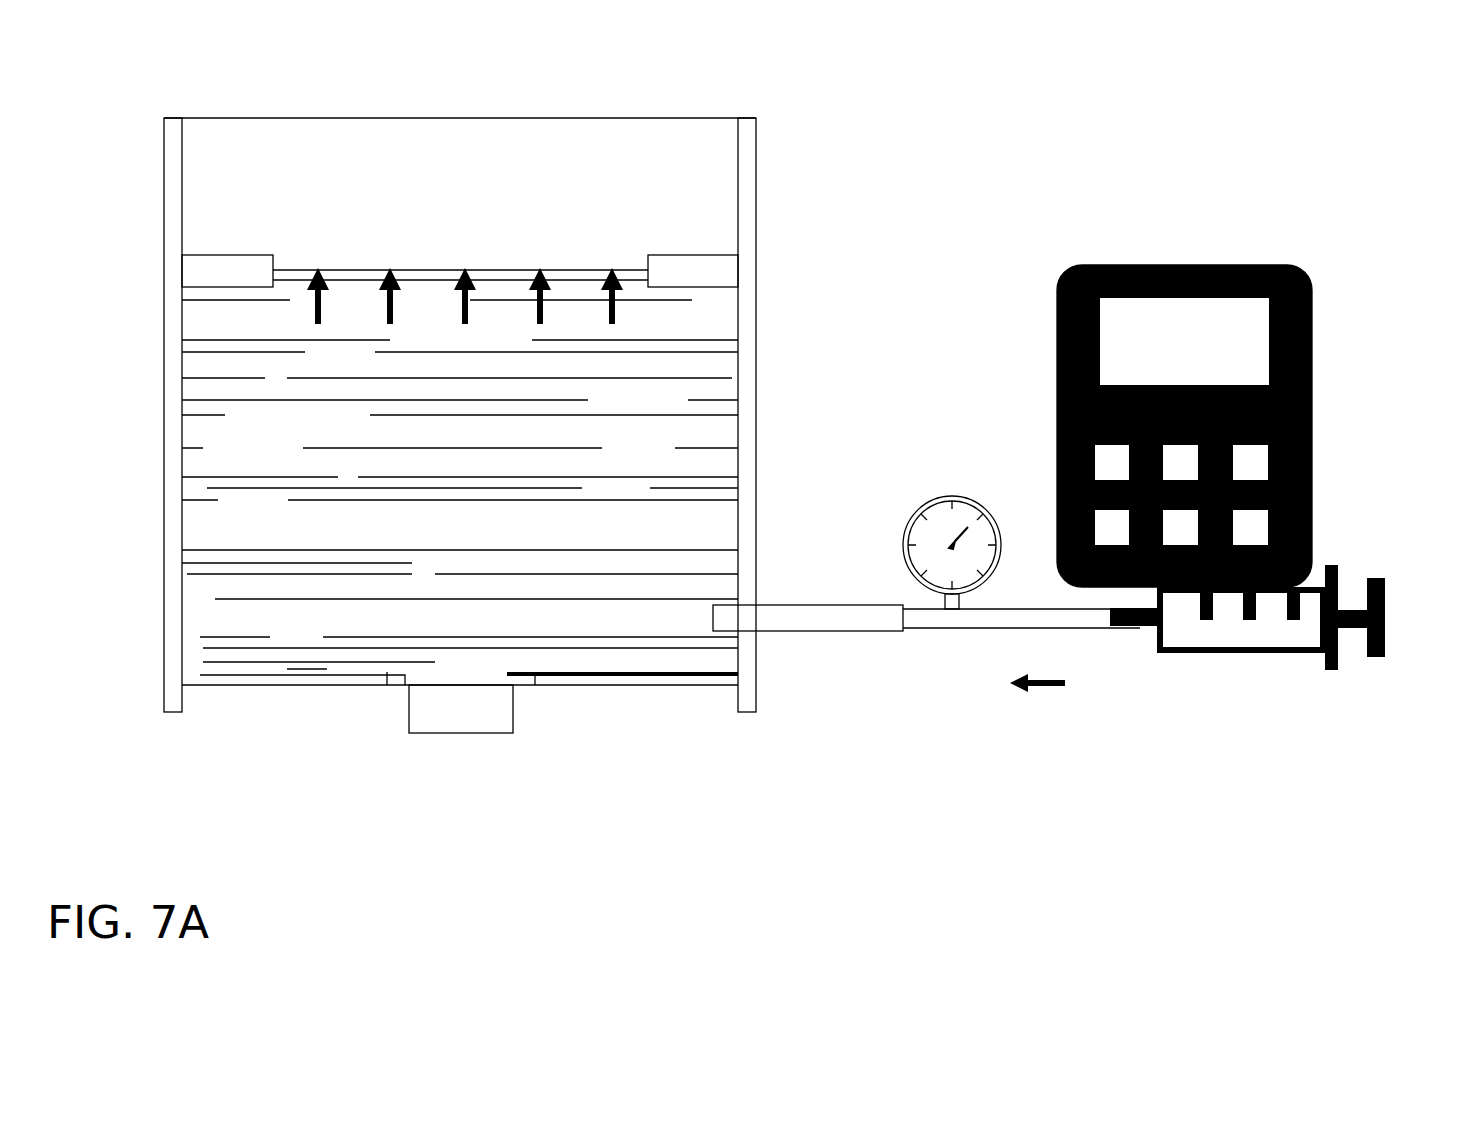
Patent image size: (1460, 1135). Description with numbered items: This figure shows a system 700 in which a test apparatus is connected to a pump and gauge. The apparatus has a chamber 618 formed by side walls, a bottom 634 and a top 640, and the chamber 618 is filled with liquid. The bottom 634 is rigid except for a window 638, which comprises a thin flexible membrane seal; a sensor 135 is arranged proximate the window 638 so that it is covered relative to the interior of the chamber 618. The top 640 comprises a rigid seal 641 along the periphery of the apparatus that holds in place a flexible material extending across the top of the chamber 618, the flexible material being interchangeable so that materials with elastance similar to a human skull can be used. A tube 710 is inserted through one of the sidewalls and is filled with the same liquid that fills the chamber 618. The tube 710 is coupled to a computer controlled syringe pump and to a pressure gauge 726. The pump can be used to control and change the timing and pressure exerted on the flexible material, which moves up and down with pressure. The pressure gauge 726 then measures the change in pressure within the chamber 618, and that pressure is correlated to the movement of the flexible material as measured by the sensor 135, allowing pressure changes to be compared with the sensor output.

The system 700 is at (157, 888).
The chamber 618 is at (460, 415).
The top 640 is at (449, 240).
The rigid seal 641 is at (460, 271).
The bottom 634 is at (408, 734).
The window 638 is at (332, 745).
The sensor 135 is at (461, 711).
The tube 710 is at (926, 534).
The pressure gauge 726 is at (919, 493).